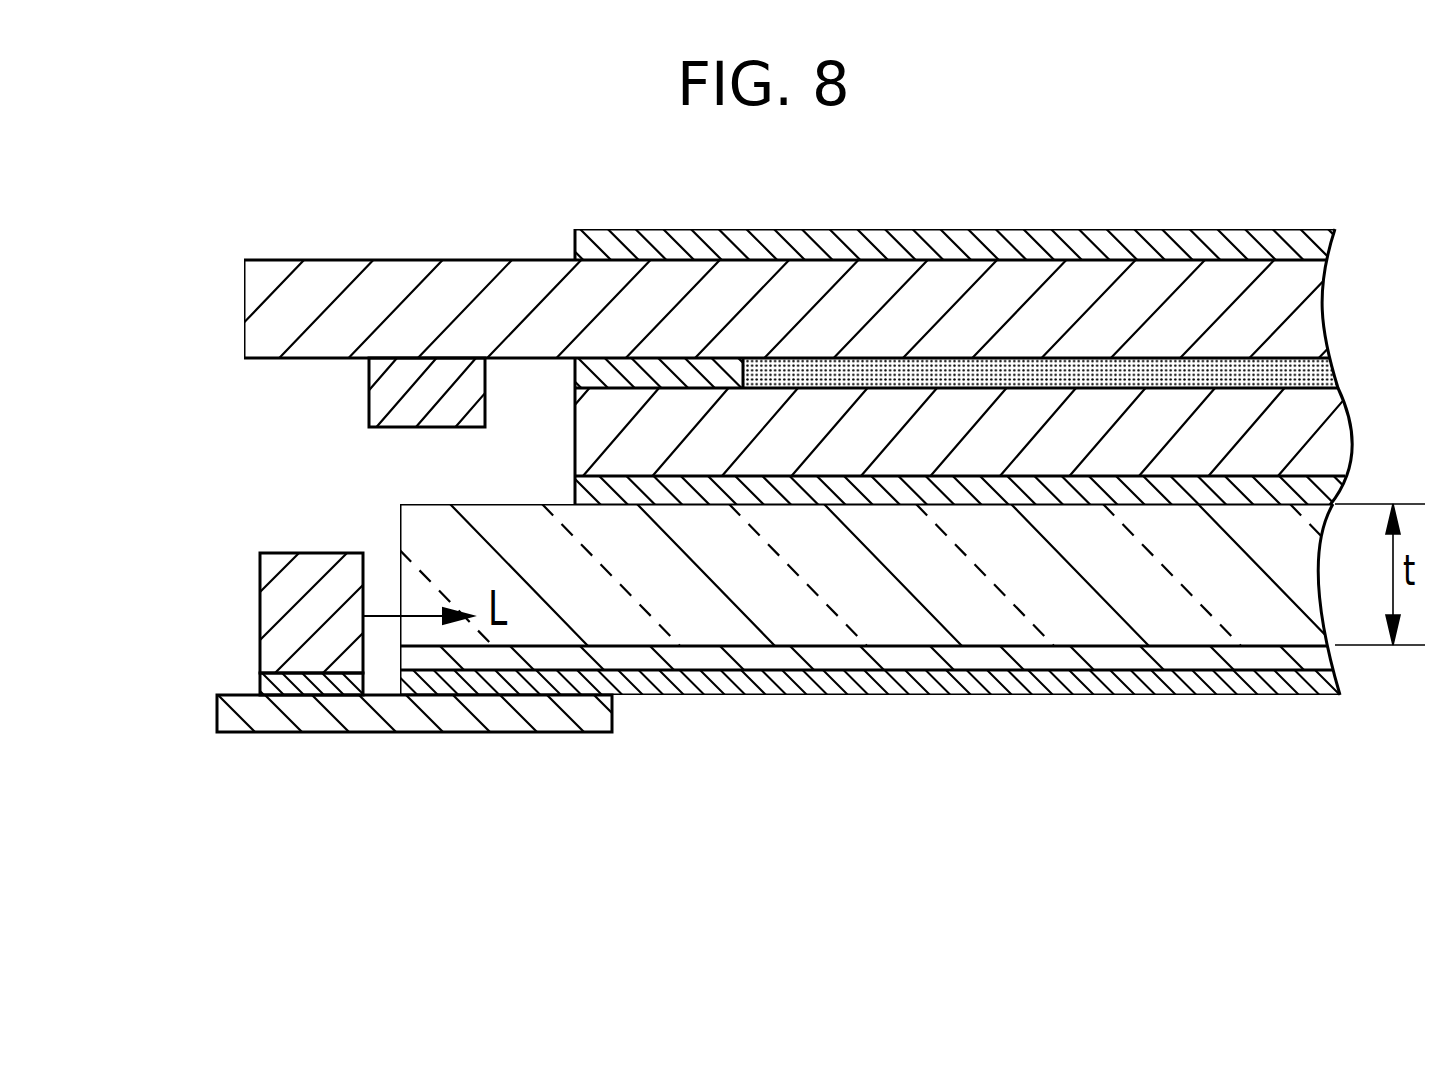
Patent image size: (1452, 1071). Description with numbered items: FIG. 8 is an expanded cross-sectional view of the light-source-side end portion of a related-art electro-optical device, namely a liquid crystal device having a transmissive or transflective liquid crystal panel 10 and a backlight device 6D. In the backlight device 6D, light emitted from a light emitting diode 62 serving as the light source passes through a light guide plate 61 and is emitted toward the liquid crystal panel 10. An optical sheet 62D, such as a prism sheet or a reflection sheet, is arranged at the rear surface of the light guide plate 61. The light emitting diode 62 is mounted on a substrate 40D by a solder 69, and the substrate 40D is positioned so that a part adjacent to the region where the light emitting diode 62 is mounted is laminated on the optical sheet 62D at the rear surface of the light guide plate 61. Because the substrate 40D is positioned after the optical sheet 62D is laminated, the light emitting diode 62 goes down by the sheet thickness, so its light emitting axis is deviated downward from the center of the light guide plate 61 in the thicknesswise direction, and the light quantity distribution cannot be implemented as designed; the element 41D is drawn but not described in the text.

The liquid crystal panel 10 is at (1355, 262).
The backlight device 6D is at (145, 508).
The light guide plate 61 is at (413, 532).
The light emitting diode 62 is at (267, 602).
The optical sheet 62D is at (830, 662).
The solder 69 is at (283, 687).
The substrate 40D is at (353, 713).
The wiring board 41D is at (505, 715).